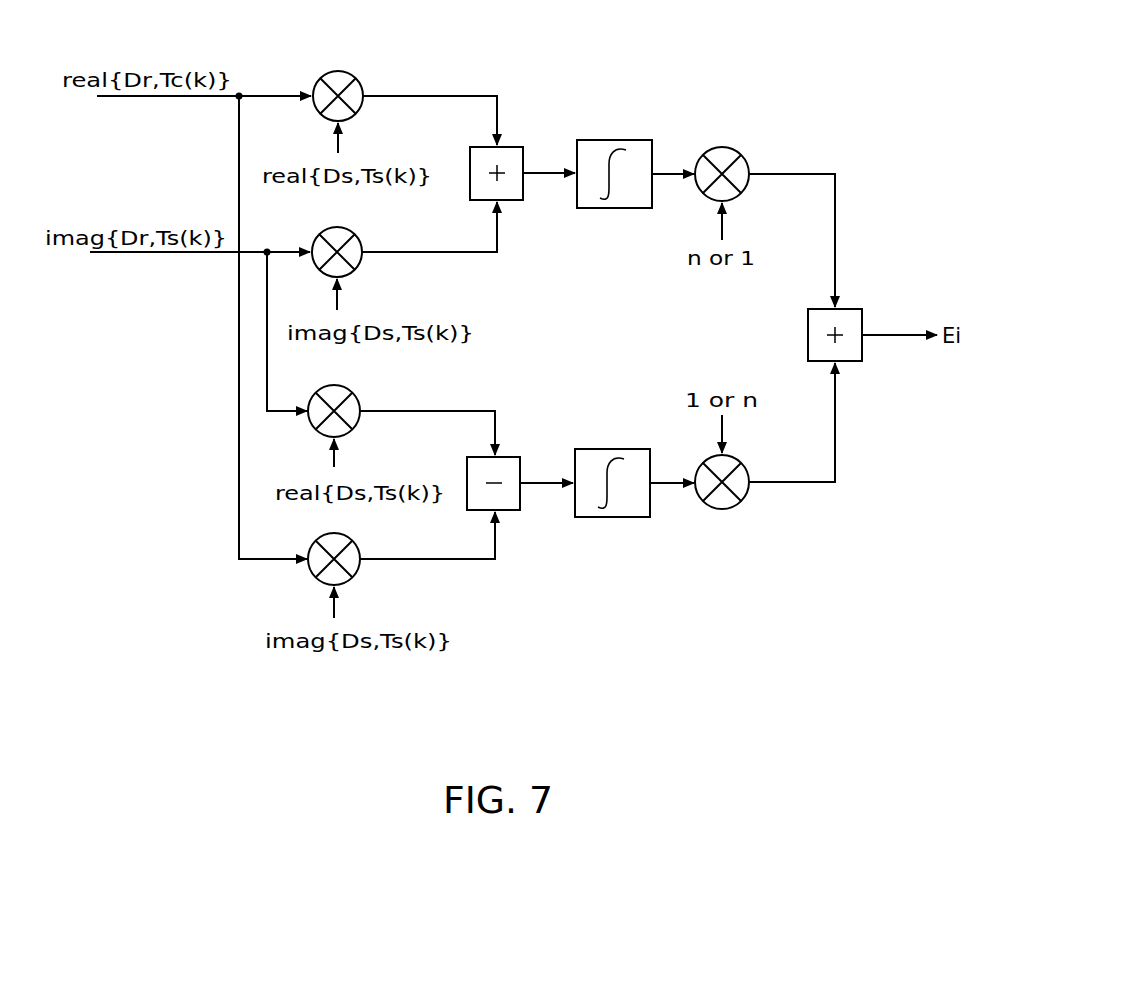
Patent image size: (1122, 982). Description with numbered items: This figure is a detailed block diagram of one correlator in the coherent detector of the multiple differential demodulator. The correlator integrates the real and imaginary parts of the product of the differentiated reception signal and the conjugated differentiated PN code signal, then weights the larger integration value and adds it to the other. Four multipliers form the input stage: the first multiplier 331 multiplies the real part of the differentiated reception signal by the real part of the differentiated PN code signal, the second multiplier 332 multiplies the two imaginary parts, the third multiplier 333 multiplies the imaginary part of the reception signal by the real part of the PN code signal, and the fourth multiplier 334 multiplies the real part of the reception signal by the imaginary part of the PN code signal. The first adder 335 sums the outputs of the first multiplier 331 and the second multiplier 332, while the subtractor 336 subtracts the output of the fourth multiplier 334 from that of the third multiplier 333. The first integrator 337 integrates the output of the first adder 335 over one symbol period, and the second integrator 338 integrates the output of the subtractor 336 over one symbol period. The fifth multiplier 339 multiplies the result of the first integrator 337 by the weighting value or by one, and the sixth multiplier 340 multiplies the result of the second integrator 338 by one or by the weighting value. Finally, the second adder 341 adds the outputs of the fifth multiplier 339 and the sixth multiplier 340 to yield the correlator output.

The first multiplier 331 is at (341, 71).
The second multiplier 332 is at (358, 270).
The third multiplier 333 is at (359, 398).
The fourth multiplier 334 is at (359, 571).
The first adder 335 is at (511, 202).
The subtractor 336 is at (510, 512).
The first integrator 337 is at (638, 138).
The second integrator 338 is at (632, 519).
The fifth multiplier 339 is at (730, 148).
The sixth multiplier 340 is at (745, 498).
The second adder 341 is at (852, 306).